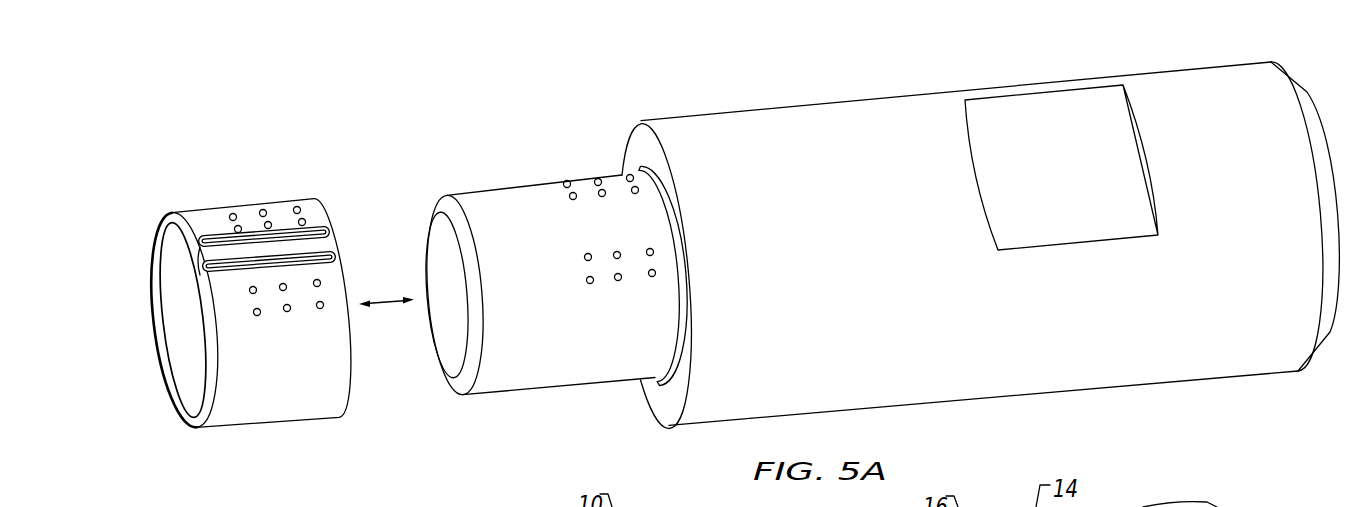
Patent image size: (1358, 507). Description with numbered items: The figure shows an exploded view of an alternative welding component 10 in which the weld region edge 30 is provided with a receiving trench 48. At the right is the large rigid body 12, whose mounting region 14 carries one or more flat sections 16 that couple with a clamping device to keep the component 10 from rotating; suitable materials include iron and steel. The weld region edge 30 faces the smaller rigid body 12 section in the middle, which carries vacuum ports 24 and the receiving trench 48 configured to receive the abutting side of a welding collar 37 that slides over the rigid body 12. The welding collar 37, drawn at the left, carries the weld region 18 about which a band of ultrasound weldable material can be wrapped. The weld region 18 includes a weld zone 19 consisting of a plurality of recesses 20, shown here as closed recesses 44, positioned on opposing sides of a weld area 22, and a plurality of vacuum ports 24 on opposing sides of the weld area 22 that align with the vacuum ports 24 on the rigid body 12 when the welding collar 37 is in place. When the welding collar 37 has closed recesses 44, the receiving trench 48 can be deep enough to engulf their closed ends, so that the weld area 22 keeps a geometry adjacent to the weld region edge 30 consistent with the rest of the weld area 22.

The welding component 10 is at (944, 232).
The rigid body 12 is at (576, 268).
The mounting region 14 is at (944, 232).
The flat sections 16 is at (1025, 140).
The weld region 18 is at (244, 329).
The weld zone 19 is at (200, 262).
The recesses 20 is at (267, 270).
The weld area 22 is at (228, 258).
The vacuum ports 24 is at (322, 307).
The weld region edge 30 is at (643, 142).
The welding collar 37 is at (163, 378).
The closed recesses 44 is at (202, 249).
The receiving trench 48 is at (665, 197).